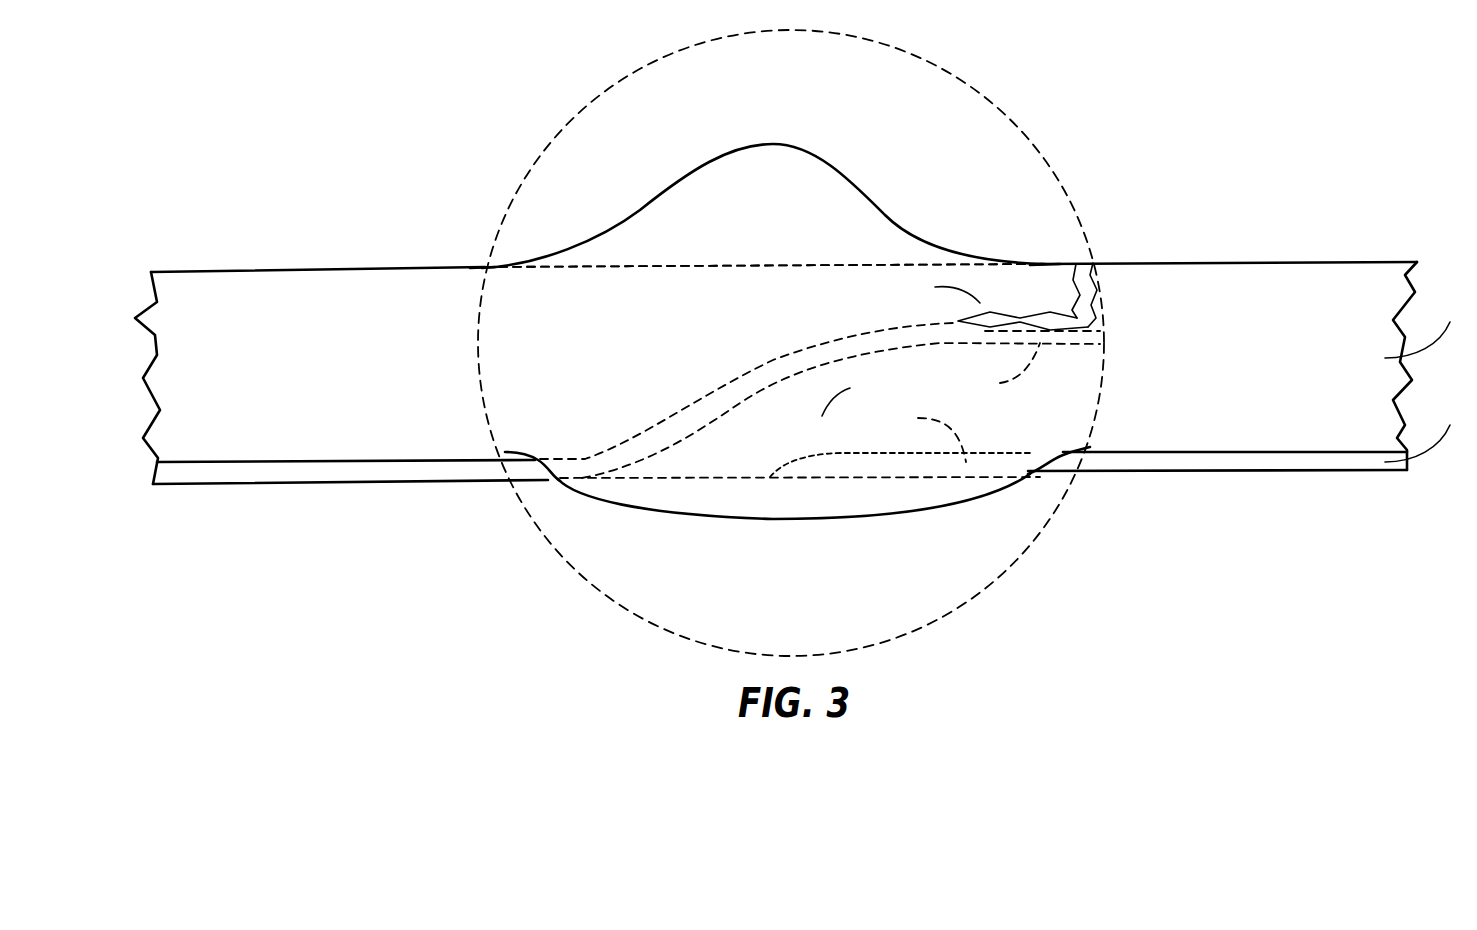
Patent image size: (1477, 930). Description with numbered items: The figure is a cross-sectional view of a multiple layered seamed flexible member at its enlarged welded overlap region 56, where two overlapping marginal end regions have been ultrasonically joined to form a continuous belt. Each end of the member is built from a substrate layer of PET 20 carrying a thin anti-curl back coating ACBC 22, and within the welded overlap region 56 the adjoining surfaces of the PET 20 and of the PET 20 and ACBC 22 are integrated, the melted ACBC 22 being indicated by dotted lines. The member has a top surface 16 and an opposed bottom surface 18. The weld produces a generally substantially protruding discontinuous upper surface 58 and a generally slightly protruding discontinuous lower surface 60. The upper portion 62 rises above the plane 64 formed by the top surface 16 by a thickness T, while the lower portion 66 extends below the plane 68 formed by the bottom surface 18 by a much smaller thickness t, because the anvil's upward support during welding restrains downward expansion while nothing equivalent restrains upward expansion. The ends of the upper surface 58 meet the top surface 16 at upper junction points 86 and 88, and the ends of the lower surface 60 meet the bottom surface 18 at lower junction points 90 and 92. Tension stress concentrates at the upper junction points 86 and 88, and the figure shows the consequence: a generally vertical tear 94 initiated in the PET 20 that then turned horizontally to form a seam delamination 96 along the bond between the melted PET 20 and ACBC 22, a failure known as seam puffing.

The top surface 16 is at (318, 270).
The bottom surface 18 is at (1262, 472).
The PET 20 is at (178, 370).
The ACBC 22 is at (180, 475).
The welded overlap region 56 is at (975, 112).
The upper surface 58 is at (673, 186).
The lower surface 60 is at (702, 517).
The upper portion 62 is at (850, 218).
The plane 64 is at (680, 268).
The lower portion 66 is at (873, 500).
The plane 68 is at (688, 477).
The upper junction point 86 is at (1058, 265).
The upper junction point 88 is at (478, 265).
The lower junction point 90 is at (1030, 473).
The lower junction point 92 is at (560, 483).
The tear 94 is at (1085, 270).
The seam delamination 96 is at (1068, 318).
The thickness of upper portion T is at (770, 146).
The thickness of lower portion t is at (778, 478).